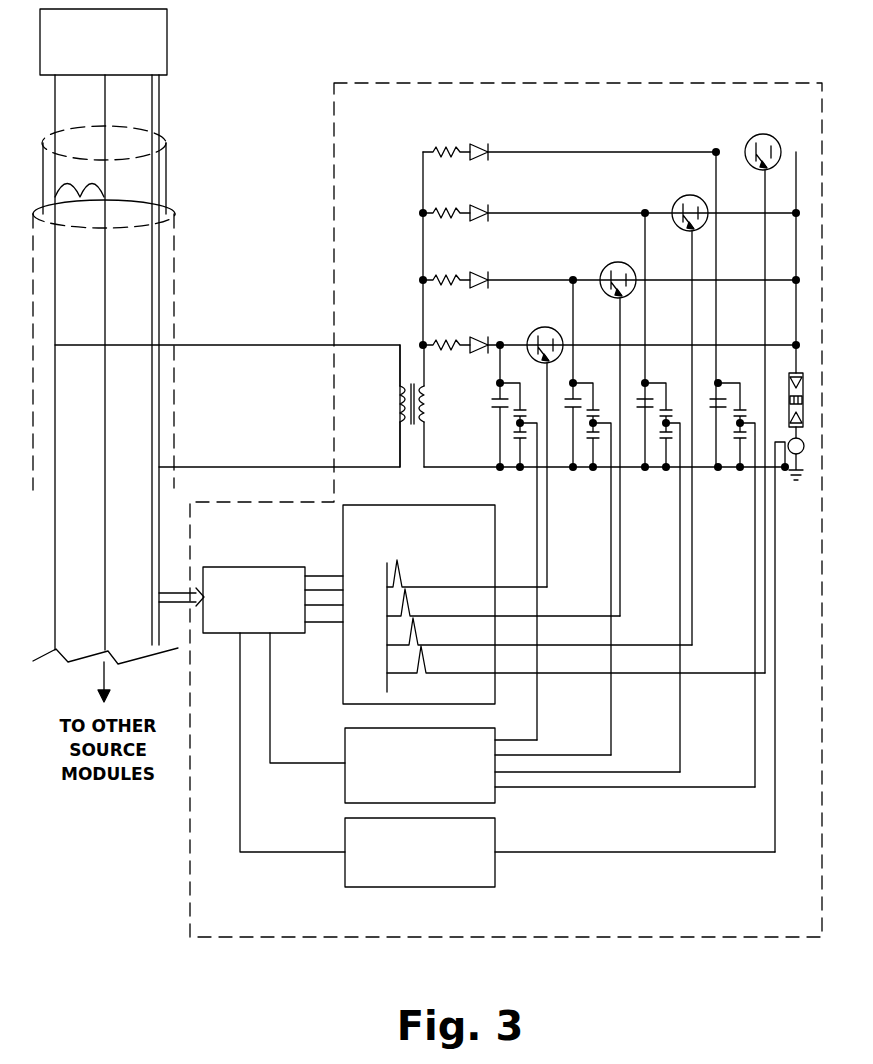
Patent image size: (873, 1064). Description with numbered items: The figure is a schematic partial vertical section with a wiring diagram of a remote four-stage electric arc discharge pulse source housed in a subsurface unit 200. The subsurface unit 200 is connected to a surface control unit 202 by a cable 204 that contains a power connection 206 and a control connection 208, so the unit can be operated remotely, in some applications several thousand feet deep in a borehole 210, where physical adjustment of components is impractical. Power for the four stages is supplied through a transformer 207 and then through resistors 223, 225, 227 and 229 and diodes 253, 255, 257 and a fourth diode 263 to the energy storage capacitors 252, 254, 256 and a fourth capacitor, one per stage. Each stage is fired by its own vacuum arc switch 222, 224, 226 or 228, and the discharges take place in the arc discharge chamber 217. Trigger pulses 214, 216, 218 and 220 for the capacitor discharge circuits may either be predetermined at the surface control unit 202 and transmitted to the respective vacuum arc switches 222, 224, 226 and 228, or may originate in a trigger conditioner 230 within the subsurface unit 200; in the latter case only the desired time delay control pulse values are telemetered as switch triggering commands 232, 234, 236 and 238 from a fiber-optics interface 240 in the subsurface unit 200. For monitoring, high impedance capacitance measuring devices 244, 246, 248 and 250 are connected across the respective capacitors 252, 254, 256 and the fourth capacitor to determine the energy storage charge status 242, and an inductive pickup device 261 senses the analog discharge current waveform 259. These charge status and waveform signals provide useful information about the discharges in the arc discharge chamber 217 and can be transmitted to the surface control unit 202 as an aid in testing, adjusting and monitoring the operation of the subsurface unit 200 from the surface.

The subsurface unit 200 is at (506, 510).
The surface control unit 202 is at (103, 42).
The cable 204 is at (168, 164).
The power connection 206 is at (79, 201).
The transformer 207 is at (399, 407).
The control connection 208 is at (161, 398).
The borehole 210 is at (176, 241).
The trigger pulse 214 is at (402, 580).
The trigger pulse 216 is at (410, 607).
The arc discharge chamber 217 is at (782, 364).
The trigger pulse 218 is at (418, 636).
The trigger pulse 220 is at (426, 665).
The vacuum arc switch 222 is at (552, 327).
The resistor 223 is at (438, 344).
The vacuum arc switch 224 is at (610, 263).
The resistor 225 is at (438, 279).
The vacuum arc switch 226 is at (694, 195).
The resistor 227 is at (440, 212).
The vacuum arc switch 228 is at (776, 140).
The resistor 229 is at (439, 151).
The trigger conditioner 230 is at (419, 604).
The switch triggering command 232 is at (325, 575).
The switch triggering command 234 is at (309, 590).
The switch triggering command 236 is at (309, 605).
The switch triggering command 238 is at (324, 623).
The fiber-optics interface 240 is at (274, 709).
The energy storage charge status 242 is at (550, 765).
The high impedance capacitance measuring device 244 is at (526, 421).
The high impedance capacitance measuring device 246 is at (600, 421).
The high impedance capacitance measuring device 248 is at (673, 421).
The high impedance capacitance measuring device 250 is at (747, 421).
The capacitor 252 is at (497, 401).
The diode 253 is at (480, 343).
The capacitor 254 is at (573, 410).
The diode 255 is at (481, 278).
The capacitor 256 is at (644, 410).
The diode 257 is at (481, 211).
The discharge current waveform 259 is at (716, 410).
The inductive pickup device 261 is at (806, 452).
The diode 263 is at (481, 150).